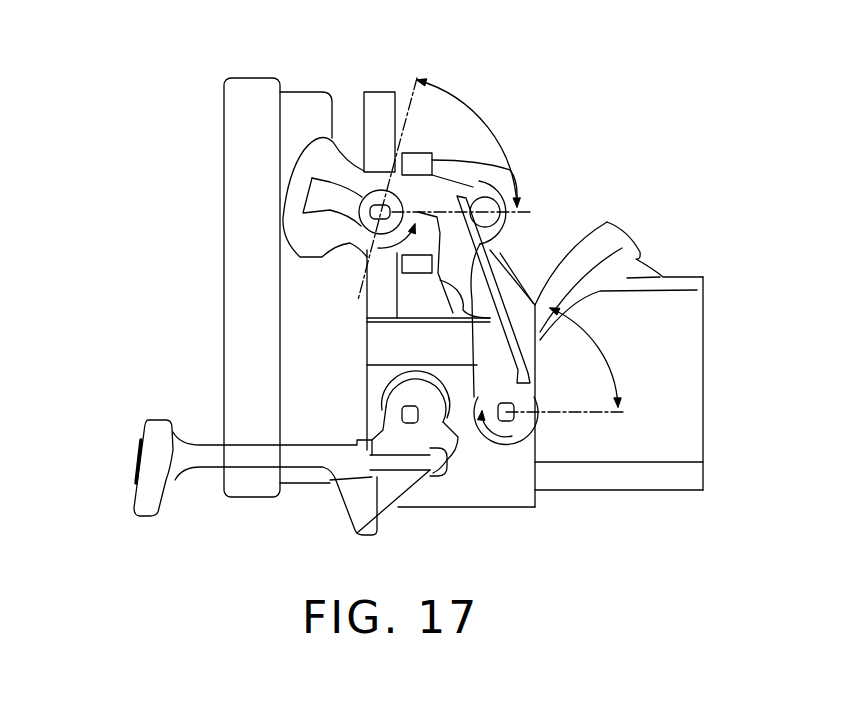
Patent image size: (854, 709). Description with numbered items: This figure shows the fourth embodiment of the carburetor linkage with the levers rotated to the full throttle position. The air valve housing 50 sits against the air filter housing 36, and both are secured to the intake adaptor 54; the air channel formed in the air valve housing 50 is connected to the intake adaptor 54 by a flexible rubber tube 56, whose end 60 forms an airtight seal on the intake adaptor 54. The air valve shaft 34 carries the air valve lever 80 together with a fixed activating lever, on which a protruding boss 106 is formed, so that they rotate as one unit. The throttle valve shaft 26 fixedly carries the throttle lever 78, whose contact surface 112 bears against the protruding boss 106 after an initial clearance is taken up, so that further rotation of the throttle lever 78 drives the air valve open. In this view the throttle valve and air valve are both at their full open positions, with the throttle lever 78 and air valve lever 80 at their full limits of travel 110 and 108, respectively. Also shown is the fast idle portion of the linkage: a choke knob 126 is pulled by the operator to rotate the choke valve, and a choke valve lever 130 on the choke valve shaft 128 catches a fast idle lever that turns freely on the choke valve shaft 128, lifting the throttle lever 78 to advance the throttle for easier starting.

The air filter housing 36 is at (241, 78).
The air valve housing 50 is at (379, 92).
The full limit of travel 108 is at (487, 122).
The protruding boss 106 is at (485, 205).
The flexible rubber tube 56 is at (553, 187).
The contact surface 112 is at (562, 209).
The end of the rubber tube 60 is at (623, 231).
The full limit of travel 110 is at (545, 378).
The intake adaptor 54 is at (672, 395).
The throttle valve shaft 26 is at (513, 420).
The air valve shaft 34 is at (380, 236).
The throttle lever 78 is at (457, 290).
The air valve lever 80 is at (330, 211).
The choke valve shaft 128 is at (408, 412).
The choke knob 126 is at (145, 517).
The choke valve lever 130 is at (448, 476).